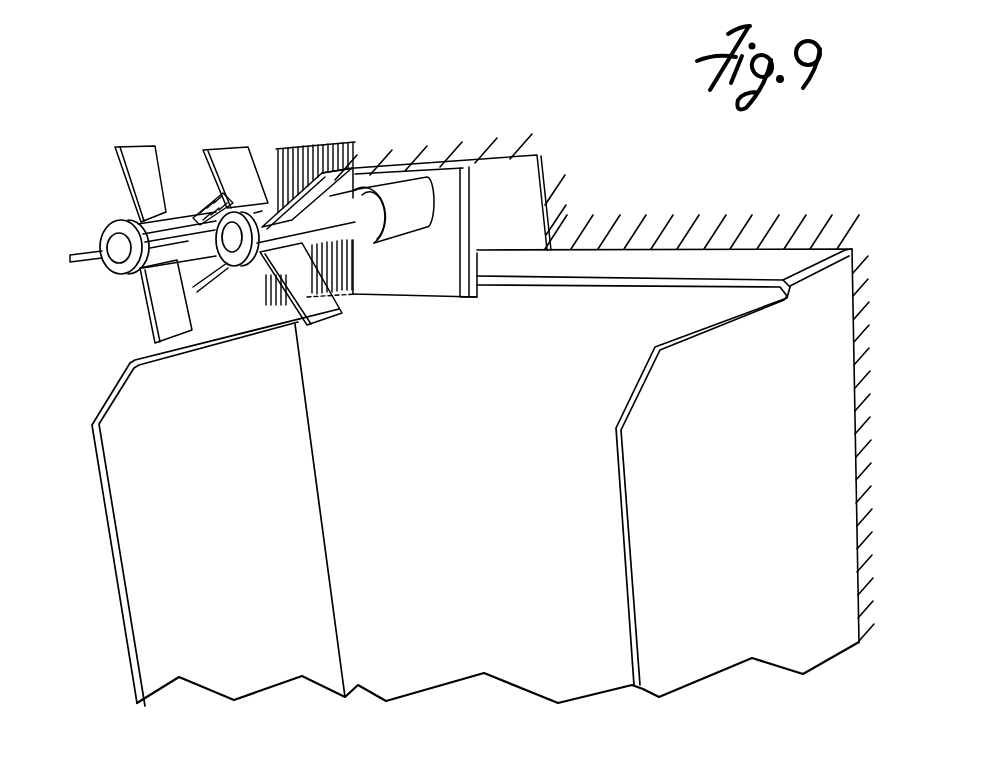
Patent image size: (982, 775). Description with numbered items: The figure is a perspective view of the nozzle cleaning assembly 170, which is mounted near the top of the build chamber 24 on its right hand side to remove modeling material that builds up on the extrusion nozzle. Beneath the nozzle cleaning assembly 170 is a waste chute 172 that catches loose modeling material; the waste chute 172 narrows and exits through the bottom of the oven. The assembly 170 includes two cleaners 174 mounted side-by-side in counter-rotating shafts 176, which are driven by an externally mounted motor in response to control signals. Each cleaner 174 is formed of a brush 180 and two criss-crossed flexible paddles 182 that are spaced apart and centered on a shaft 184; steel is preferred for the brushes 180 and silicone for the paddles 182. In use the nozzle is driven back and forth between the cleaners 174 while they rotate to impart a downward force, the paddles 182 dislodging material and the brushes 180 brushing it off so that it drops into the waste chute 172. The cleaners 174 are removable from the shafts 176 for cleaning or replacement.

The build chamber 24 is at (642, 202).
The nozzle cleaning assembly 170 is at (402, 95).
The waste chute 172 is at (500, 449).
The cleaner 174 is at (258, 207).
The counter-rotating shaft 176 is at (403, 203).
The brush 180 is at (323, 155).
The flexible paddle 182 is at (132, 168).
The shaft 184 is at (116, 256).